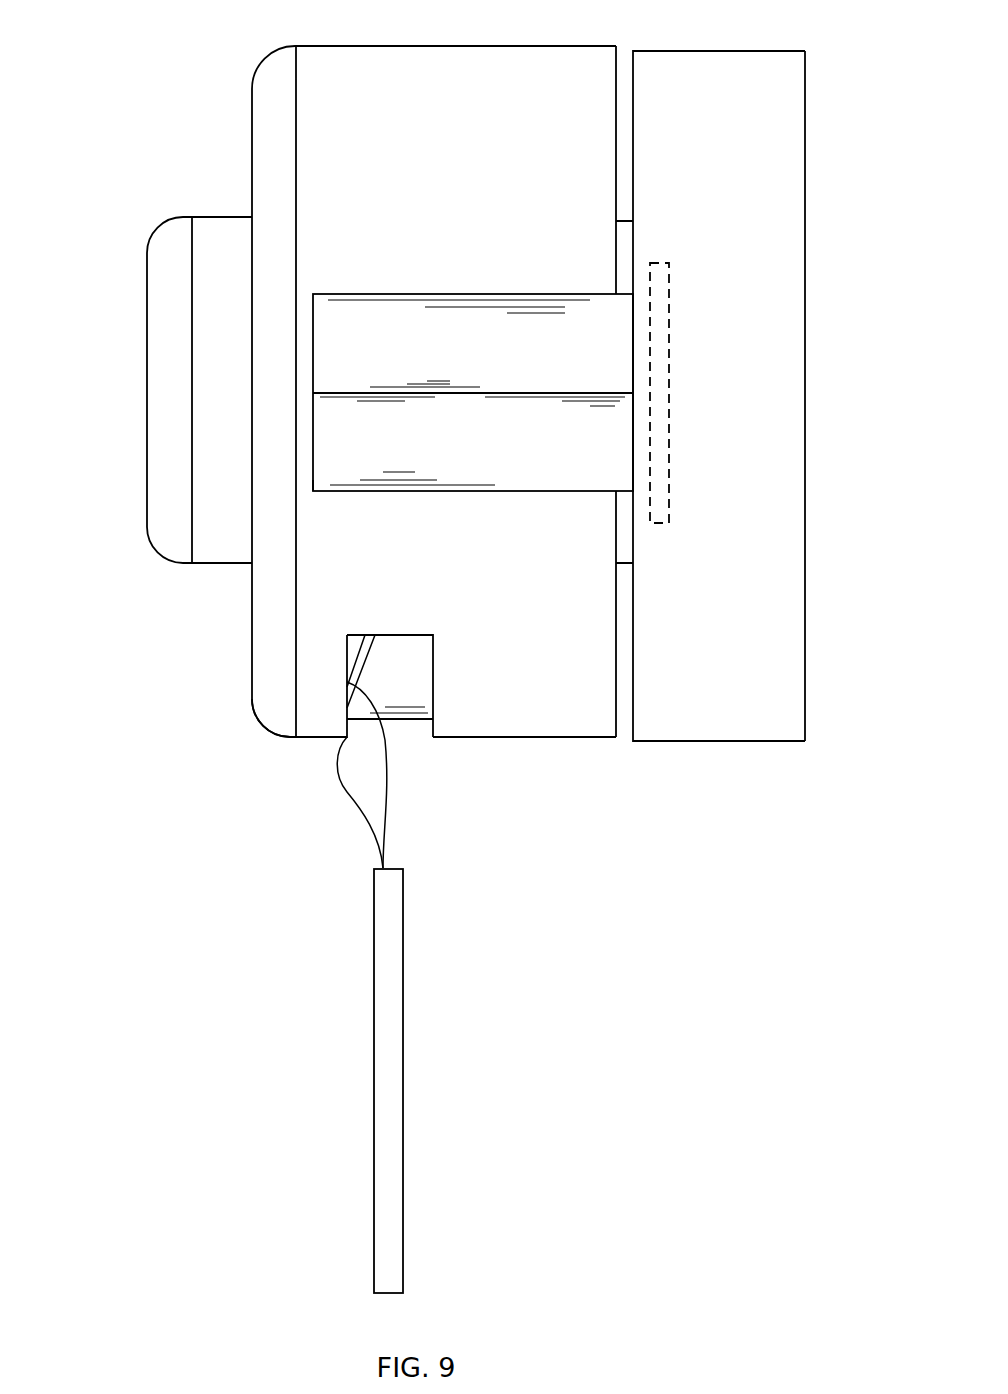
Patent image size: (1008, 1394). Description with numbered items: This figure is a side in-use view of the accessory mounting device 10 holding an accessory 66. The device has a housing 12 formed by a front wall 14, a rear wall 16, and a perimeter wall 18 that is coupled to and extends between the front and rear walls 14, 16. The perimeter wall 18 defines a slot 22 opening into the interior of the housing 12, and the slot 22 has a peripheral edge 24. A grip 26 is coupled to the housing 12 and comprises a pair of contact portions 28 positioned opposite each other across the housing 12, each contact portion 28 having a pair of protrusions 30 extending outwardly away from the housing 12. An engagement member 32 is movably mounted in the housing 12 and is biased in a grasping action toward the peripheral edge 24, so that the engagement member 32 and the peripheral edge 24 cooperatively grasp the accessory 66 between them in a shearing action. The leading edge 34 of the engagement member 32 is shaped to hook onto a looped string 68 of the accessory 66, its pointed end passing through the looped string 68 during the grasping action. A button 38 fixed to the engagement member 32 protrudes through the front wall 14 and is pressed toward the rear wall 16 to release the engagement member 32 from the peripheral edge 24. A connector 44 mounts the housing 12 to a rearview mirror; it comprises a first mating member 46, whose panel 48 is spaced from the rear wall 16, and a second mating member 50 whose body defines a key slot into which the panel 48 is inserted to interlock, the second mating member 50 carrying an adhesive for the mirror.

The accessory mounting device 10 is at (573, 1008).
The housing 12 is at (253, 713).
The front wall 14 is at (252, 625).
The rear wall 16 is at (615, 680).
The perimeter wall 18 is at (588, 710).
The slot 22 is at (418, 747).
The peripheral edge 24 is at (353, 735).
The grip 26 is at (325, 492).
The contact portion 28 is at (423, 283).
The protrusion 30 is at (337, 346).
The engagement member 32 is at (415, 673).
The leading edge 34 is at (367, 670).
The button 38 is at (150, 285).
The connector 44 is at (754, 809).
The first mating member 46 is at (697, 317).
The panel 48 is at (657, 442).
The second mating member 50 is at (832, 644).
The accessory 66 is at (340, 1048).
The looped string 68 is at (370, 833).